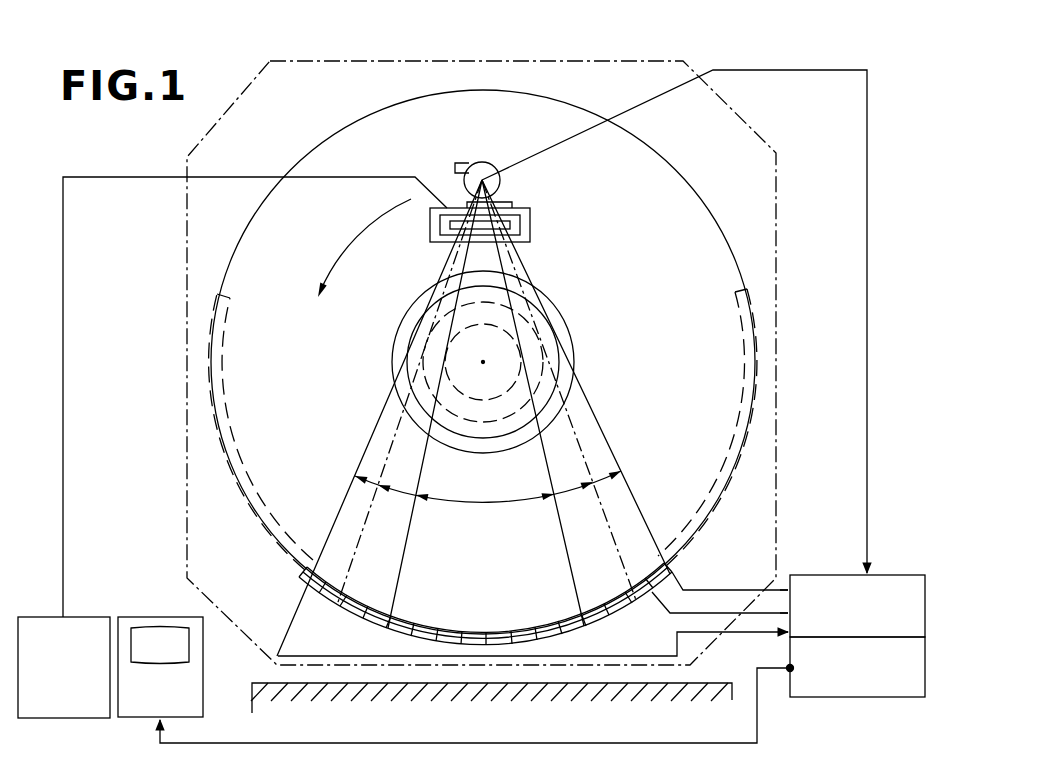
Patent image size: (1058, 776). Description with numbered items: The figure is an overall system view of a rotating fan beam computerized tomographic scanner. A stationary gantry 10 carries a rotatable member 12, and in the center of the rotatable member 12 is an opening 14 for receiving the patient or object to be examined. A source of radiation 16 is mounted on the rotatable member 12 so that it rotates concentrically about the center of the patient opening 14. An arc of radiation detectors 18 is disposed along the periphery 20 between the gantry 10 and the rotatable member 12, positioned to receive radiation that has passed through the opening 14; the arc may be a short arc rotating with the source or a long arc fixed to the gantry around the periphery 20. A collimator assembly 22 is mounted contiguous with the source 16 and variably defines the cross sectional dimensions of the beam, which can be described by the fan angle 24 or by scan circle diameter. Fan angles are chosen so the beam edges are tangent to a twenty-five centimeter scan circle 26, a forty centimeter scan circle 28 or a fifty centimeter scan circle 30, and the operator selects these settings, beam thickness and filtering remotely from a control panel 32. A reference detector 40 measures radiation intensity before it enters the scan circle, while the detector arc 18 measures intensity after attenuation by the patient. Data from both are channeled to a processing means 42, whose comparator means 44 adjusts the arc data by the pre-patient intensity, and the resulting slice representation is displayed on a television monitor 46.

The stationary gantry 10 is at (782, 407).
The rotatable member 12 is at (678, 210).
The opening 14 is at (567, 333).
The source of radiation 16 is at (497, 163).
The arc of radiation detectors 18 is at (370, 627).
The periphery 20 is at (754, 339).
The collimator assembly 22 is at (528, 207).
The fan angle 24 is at (529, 263).
The 25 centimeter diameter scan circle 26 is at (458, 335).
The 40 centimeter scan circle 28 is at (427, 370).
The 50 centimeter scan circle 30 is at (415, 398).
The control panel 32 is at (72, 618).
The reference detector 40 is at (505, 202).
The processing means 42 is at (882, 700).
The comparator means 44 is at (885, 573).
The television monitor 46 is at (137, 617).